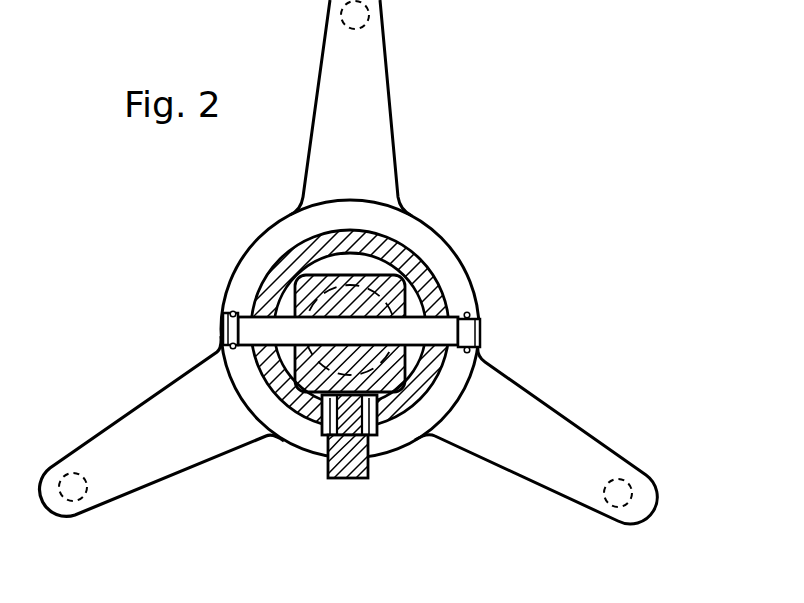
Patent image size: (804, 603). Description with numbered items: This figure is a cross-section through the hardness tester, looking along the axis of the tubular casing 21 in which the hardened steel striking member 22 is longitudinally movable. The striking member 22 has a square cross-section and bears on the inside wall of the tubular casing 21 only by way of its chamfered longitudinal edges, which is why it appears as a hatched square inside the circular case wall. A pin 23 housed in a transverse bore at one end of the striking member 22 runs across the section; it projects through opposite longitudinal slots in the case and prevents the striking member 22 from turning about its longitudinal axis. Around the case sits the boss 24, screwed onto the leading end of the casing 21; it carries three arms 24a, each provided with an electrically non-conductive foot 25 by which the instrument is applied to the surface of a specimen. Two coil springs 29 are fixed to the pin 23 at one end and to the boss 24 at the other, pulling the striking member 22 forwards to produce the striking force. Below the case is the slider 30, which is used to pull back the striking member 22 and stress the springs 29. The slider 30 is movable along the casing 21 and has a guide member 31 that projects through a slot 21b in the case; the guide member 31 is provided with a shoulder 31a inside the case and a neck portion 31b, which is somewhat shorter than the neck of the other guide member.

The tubular casing 21 is at (413, 273).
The slot 21b is at (323, 432).
The striking member 22 is at (395, 303).
The pin 23 is at (442, 332).
The boss 24 is at (407, 233).
The arm 24a is at (172, 427).
The foot 25 is at (369, 18).
The coil spring 29 is at (231, 313).
The slider 30 is at (353, 478).
The guide member 31 is at (377, 441).
The shoulder 31a is at (372, 398).
The neck portion 31b is at (365, 436).